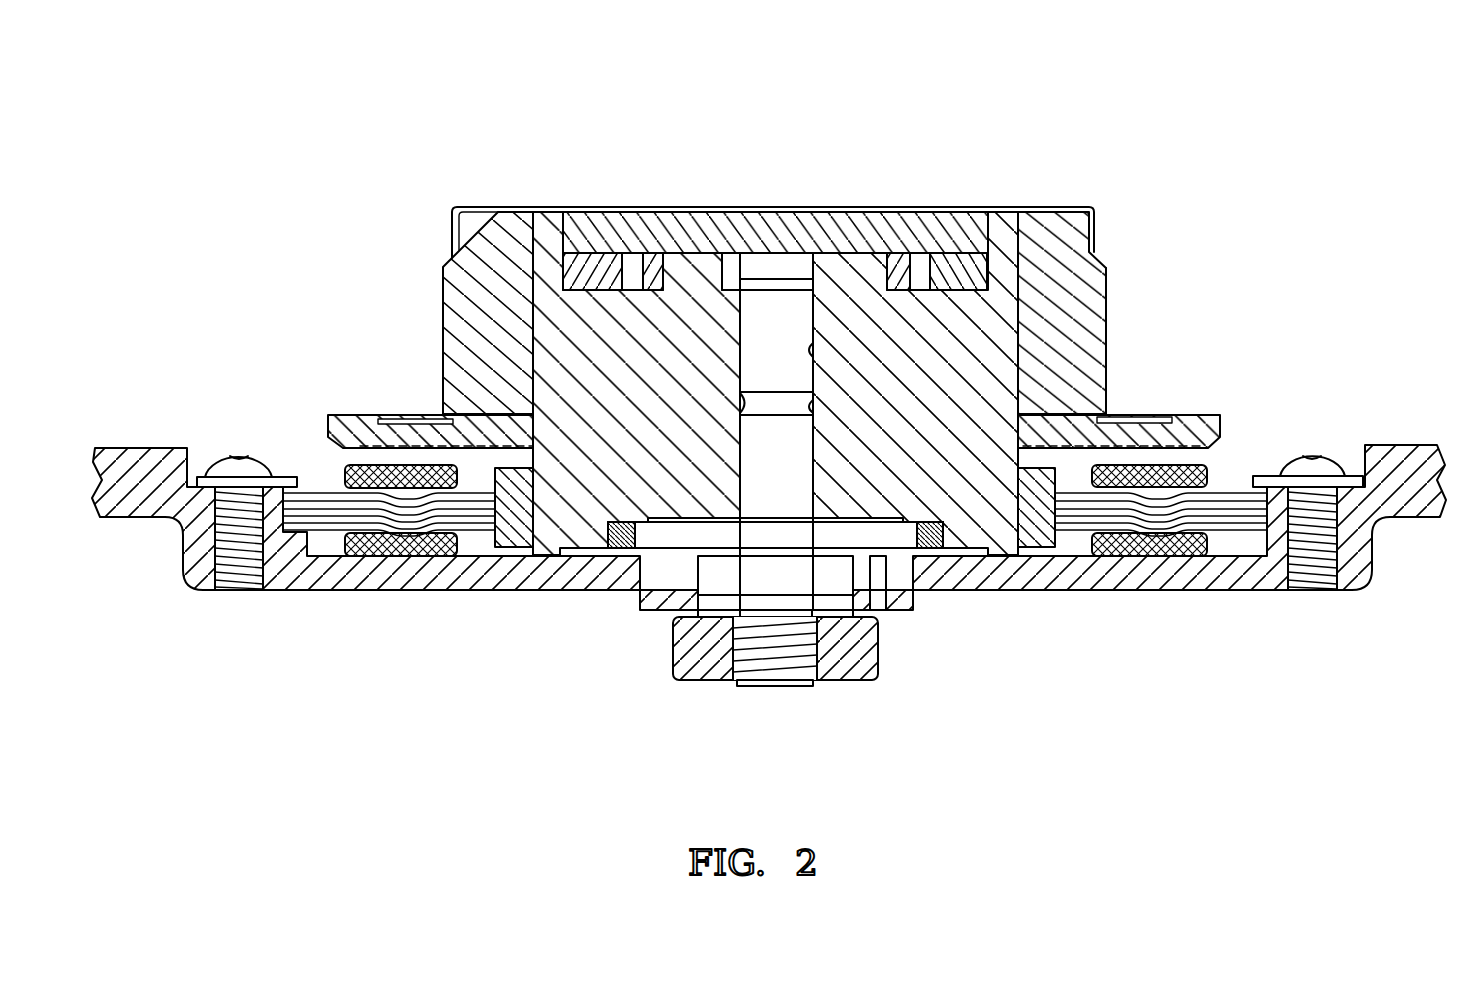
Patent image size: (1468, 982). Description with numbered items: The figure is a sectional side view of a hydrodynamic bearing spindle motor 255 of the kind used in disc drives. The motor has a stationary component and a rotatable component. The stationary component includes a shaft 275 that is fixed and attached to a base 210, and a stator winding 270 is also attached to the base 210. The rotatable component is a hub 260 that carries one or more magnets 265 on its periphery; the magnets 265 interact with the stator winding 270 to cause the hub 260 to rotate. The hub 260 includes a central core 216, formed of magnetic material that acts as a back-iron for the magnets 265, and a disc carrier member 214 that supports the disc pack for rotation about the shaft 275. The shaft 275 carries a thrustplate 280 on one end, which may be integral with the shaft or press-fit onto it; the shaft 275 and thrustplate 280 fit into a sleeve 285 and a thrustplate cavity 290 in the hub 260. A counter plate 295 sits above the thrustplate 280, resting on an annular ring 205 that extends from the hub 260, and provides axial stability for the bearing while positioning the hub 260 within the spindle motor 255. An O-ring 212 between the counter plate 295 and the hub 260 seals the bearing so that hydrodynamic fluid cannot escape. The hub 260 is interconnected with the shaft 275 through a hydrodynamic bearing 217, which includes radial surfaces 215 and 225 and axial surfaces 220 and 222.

The annular ring 205 is at (1065, 336).
The base 210 is at (1083, 577).
The O-ring 212 is at (995, 283).
The disc carrier member 214 is at (1106, 298).
The radial surface 215 is at (744, 370).
The core 216 is at (1023, 410).
The hydrodynamic bearing 217 is at (737, 330).
The axial surface 220 is at (700, 250).
The axial surface 222 is at (723, 286).
The radial surface 225 is at (739, 305).
The hydrodynamic bearing spindle motor 255 is at (736, 369).
The hub 260 is at (433, 388).
The magnet 265 is at (1047, 548).
The stator winding 270 is at (1197, 545).
The shaft 275 is at (803, 468).
The thrustplate 280 is at (852, 252).
The sleeve 285 is at (1023, 377).
The thrustplate cavity 290 is at (933, 270).
The counter plate 295 is at (633, 213).